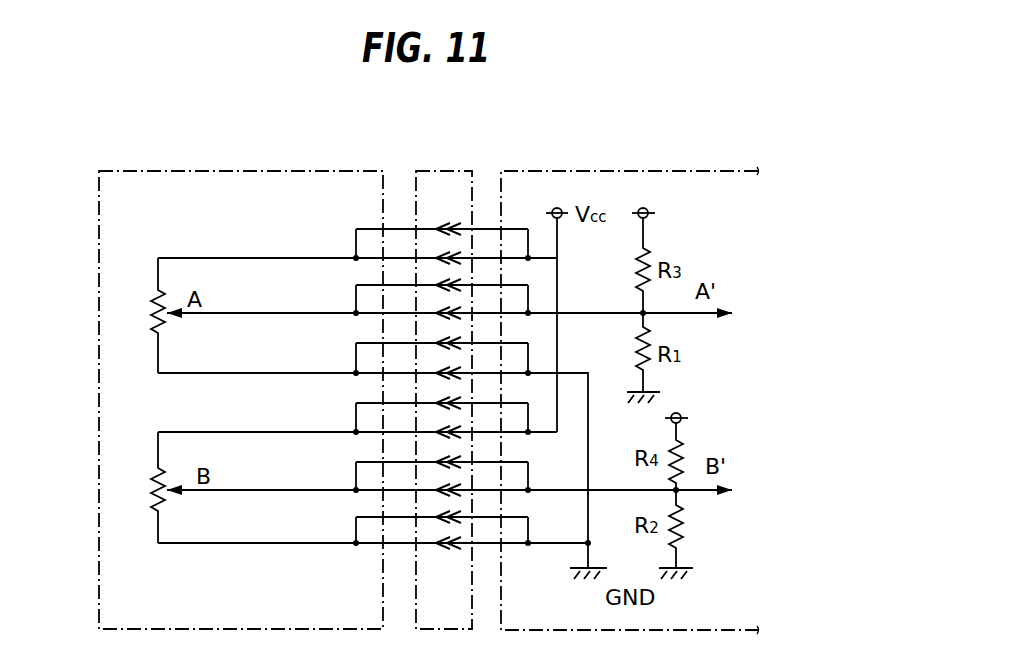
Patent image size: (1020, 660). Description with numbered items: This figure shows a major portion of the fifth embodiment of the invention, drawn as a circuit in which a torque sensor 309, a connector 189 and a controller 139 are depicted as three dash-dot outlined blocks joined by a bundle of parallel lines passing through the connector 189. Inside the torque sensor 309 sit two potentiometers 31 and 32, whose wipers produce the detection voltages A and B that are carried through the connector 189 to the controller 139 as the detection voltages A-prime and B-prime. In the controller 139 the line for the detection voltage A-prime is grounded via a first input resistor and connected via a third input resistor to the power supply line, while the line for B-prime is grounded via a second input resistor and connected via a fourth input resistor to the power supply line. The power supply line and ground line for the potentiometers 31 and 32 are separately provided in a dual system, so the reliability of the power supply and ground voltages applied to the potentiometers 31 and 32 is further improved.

The torque sensor 309 is at (251, 171).
The connector 189 is at (449, 171).
The controller 139 is at (587, 171).
The potentiometer 31 is at (152, 299).
The potentiometer 32 is at (152, 471).